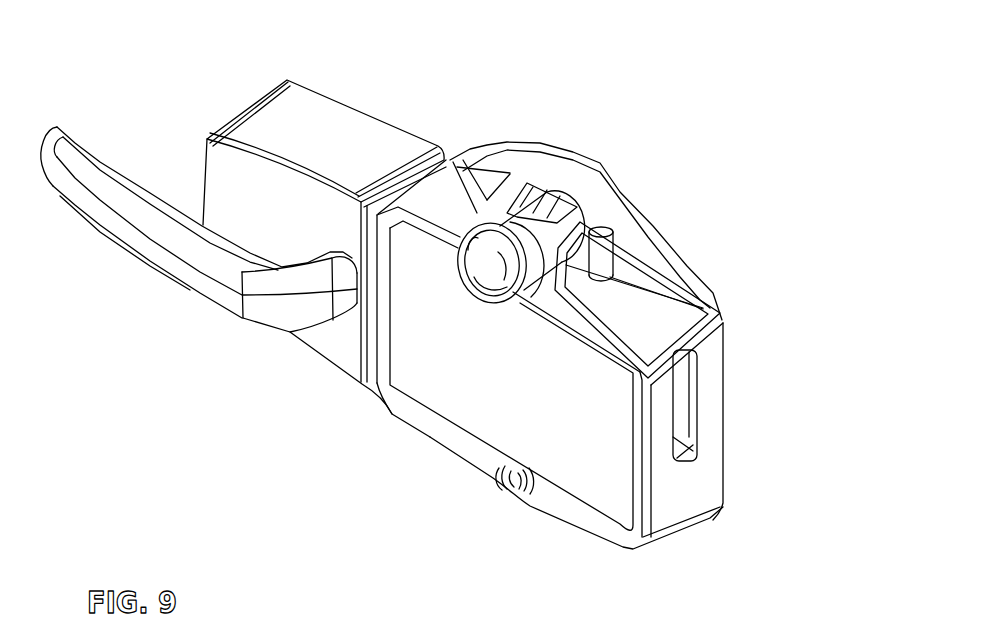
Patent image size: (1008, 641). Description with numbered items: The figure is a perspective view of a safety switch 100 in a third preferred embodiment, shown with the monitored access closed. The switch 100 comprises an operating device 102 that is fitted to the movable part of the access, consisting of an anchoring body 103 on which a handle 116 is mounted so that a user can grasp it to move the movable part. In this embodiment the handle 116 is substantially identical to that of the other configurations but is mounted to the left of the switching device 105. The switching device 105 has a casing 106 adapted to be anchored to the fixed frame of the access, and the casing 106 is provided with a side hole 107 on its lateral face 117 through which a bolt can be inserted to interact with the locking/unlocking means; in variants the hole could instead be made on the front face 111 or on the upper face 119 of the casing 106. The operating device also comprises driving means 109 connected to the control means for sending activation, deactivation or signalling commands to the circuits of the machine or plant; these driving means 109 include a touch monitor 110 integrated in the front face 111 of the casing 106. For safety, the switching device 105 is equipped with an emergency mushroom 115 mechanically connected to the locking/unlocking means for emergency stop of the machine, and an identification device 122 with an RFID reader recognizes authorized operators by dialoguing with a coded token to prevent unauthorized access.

The switch 100 is at (732, 126).
The operating device 102 is at (158, 97).
The anchoring body 103 is at (276, 105).
The switching device 105 is at (757, 330).
The casing 106 is at (507, 148).
The side hole 107 is at (686, 414).
The driving means 109 is at (413, 413).
The touch monitor 110 is at (530, 396).
The front face 111 is at (587, 523).
The emergency mushroom 115 is at (520, 200).
The handle 116 is at (137, 257).
The lateral face 117 is at (700, 493).
The upper face 119 is at (670, 307).
The identification device 122 is at (497, 497).